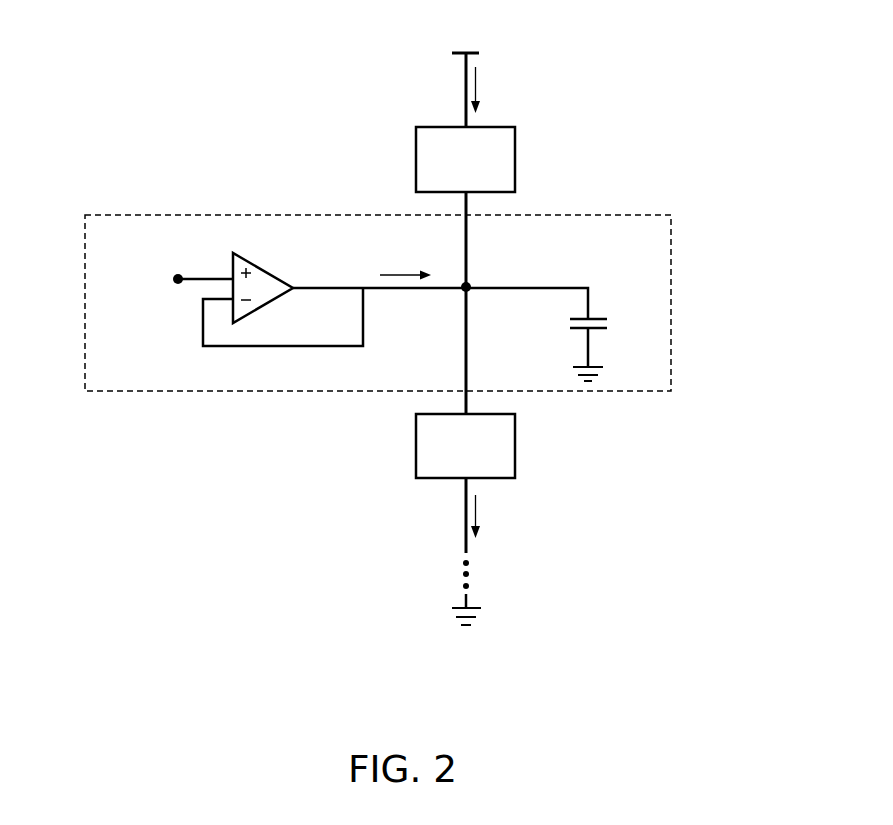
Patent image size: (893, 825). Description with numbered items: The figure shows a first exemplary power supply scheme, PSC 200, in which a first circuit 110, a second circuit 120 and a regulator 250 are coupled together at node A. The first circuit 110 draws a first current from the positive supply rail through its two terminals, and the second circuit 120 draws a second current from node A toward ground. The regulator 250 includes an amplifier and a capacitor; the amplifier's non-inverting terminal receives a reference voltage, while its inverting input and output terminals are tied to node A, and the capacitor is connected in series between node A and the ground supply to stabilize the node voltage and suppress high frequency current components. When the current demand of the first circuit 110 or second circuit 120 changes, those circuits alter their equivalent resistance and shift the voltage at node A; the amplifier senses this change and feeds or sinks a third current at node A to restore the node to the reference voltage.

The PSC 200 is at (168, 93).
The first circuit 110 is at (515, 152).
The second circuit 120 is at (515, 442).
The regulator 250 is at (671, 375).